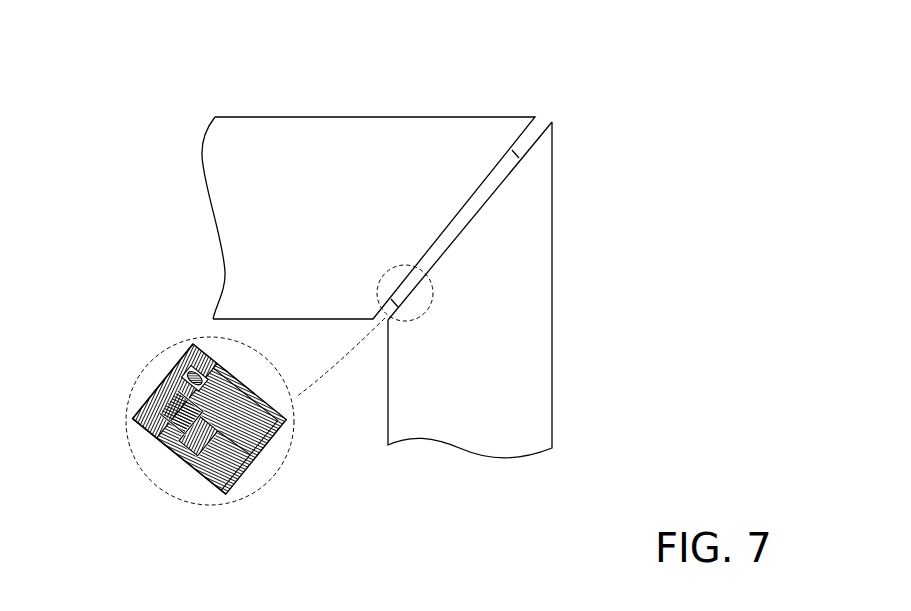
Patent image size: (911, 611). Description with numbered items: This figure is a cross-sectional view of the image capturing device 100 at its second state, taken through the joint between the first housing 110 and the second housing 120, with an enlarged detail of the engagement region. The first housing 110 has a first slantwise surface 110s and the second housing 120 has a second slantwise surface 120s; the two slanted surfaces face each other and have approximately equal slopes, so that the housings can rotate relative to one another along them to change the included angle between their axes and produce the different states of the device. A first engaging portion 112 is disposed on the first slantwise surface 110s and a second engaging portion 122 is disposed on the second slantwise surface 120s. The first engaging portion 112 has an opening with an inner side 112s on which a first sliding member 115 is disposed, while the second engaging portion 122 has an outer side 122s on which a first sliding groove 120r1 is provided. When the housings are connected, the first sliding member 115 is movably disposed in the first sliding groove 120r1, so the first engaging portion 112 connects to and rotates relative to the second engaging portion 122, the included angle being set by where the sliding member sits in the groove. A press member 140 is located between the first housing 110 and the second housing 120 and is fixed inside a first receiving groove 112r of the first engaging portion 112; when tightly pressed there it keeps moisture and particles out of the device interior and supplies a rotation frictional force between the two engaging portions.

The image capturing device 100 is at (218, 90).
The first housing 110 is at (368, 117).
The second housing 120 is at (552, 293).
The first engaging portion 112 is at (140, 400).
The first receiving groove 112r is at (172, 365).
The inner side 112s is at (252, 470).
The first slantwise surface 110s is at (135, 428).
The press member 140 is at (171, 372).
The first sliding groove 120r1 is at (286, 431).
The second slantwise surface 120s is at (217, 493).
The first sliding member 115 is at (268, 436).
The second engaging portion 122 is at (253, 465).
The outer side 122s is at (206, 468).